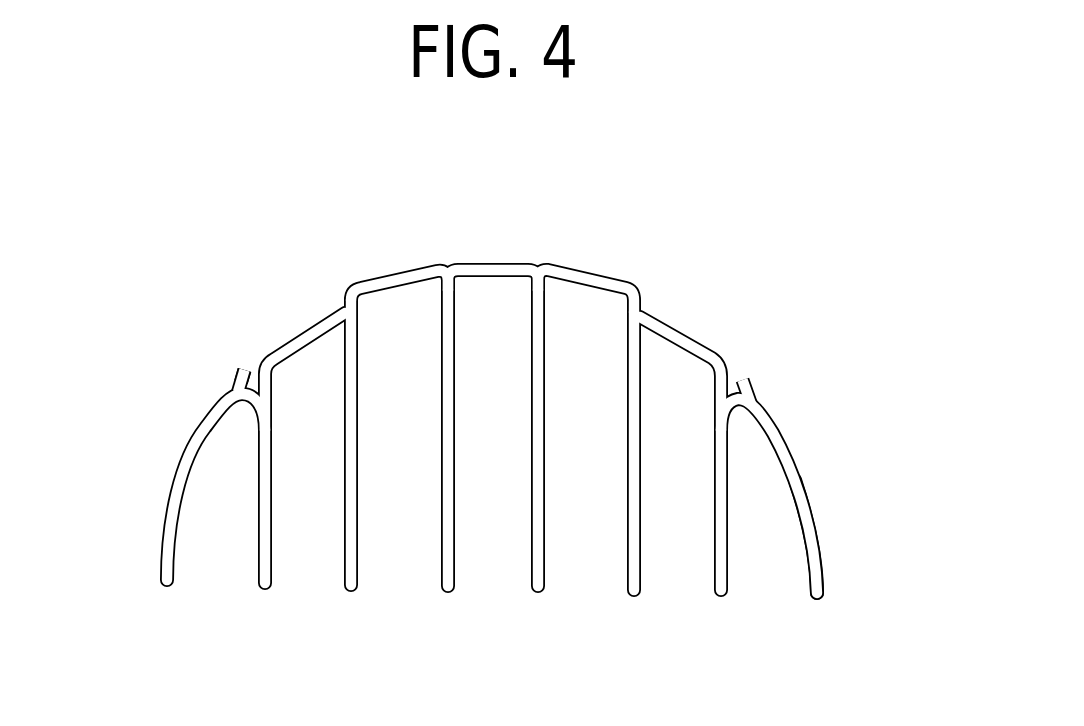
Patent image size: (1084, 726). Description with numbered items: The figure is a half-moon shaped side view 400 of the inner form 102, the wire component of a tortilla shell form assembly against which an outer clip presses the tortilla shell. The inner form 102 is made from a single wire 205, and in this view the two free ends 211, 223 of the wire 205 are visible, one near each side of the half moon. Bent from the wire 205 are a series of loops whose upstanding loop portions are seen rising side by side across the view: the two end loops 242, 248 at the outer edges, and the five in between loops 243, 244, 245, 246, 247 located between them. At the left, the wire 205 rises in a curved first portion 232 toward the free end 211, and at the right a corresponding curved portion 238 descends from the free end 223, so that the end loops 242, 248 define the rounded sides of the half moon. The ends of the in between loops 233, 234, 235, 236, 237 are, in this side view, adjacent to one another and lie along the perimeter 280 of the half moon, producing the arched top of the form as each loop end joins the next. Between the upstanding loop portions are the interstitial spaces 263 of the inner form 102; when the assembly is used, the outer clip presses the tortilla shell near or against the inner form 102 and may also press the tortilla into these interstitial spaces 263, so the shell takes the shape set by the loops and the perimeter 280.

The half-moon shaped side view 400 is at (816, 226).
The inner form 102 is at (197, 628).
The wire 205 is at (229, 382).
The free end 211 is at (240, 368).
The free end 223 is at (752, 374).
The first curved segment 232 is at (256, 406).
The end of in between loop 233 is at (291, 331).
The end of in between loop 234 is at (400, 268).
The end of in between loop 235 is at (487, 262).
The end of in between loop 236 is at (582, 268).
The end of in between loop 237 is at (686, 328).
The second curved segment 238 is at (742, 418).
The end loop 242 is at (241, 573).
The in between loop 243 is at (333, 573).
The in between loop 244 is at (426, 573).
The in between loop 245 is at (517, 573).
The in between loop 246 is at (605, 573).
The in between loop 247 is at (699, 573).
The end loop 248 is at (792, 573).
The interstitial spaces 263 is at (383, 332).
The perimeter 280 is at (648, 304).